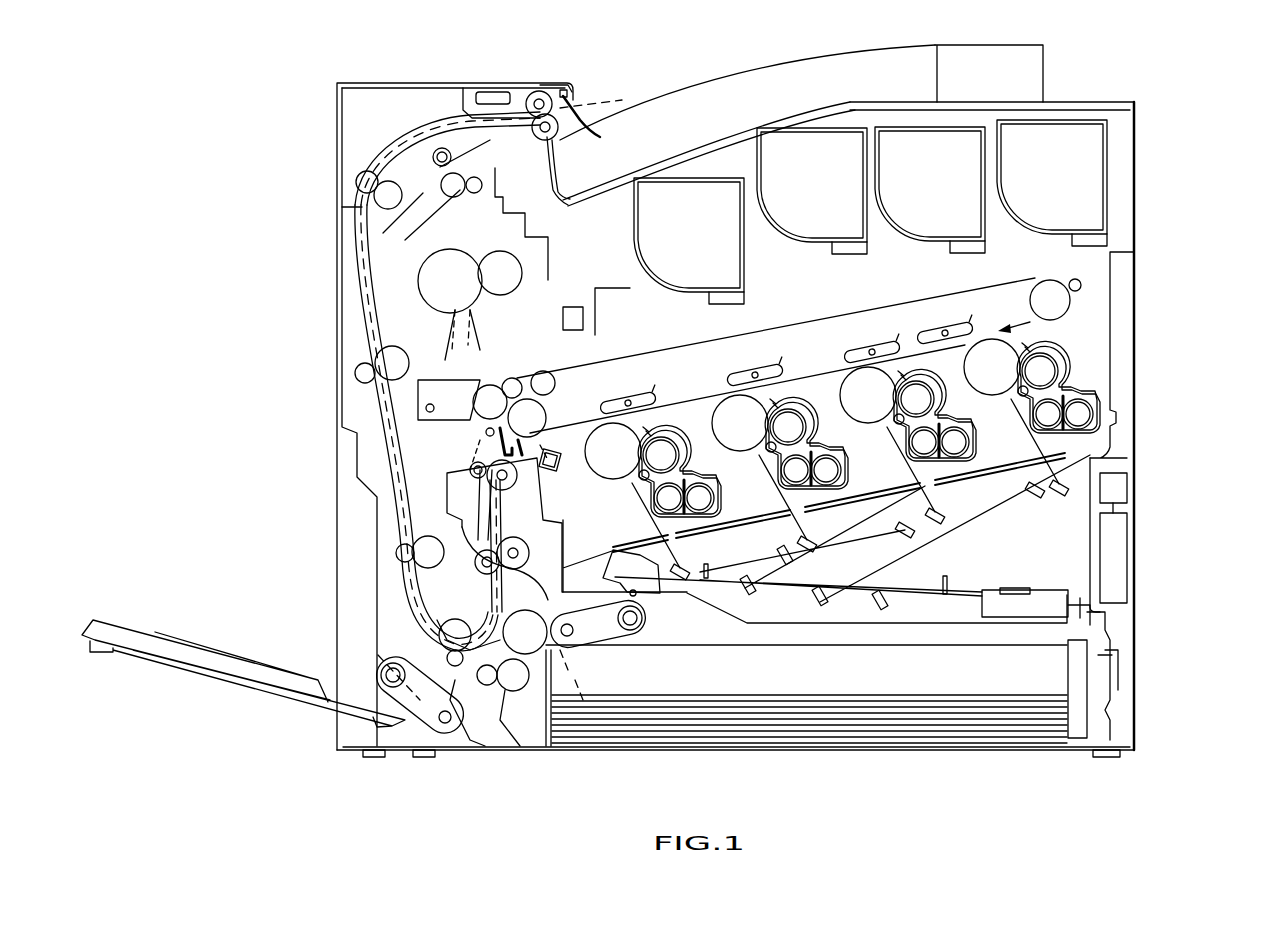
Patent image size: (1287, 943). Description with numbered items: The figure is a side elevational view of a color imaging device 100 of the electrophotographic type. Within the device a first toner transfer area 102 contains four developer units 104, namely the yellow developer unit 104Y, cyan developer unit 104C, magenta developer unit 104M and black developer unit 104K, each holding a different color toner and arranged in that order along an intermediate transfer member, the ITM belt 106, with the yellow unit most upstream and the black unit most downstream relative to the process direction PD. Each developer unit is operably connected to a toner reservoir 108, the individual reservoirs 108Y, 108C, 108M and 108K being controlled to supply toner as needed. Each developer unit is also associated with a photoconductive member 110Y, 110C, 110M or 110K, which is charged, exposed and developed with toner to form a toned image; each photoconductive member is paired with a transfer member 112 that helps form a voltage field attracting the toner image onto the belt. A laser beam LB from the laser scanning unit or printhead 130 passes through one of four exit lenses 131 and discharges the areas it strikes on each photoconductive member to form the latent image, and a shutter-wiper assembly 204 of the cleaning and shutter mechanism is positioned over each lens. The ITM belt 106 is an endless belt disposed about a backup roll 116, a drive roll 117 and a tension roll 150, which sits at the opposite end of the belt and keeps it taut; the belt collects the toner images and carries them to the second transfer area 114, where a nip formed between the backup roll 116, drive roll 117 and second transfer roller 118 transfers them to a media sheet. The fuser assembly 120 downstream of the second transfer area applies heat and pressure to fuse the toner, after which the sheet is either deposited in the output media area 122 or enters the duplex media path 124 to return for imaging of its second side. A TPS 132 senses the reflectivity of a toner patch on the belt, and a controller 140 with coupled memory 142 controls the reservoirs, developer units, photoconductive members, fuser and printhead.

The color imaging device 100 is at (220, 83).
The first toner transfer area 102 is at (895, 377).
The developer units 104 is at (955, 413).
The black developer unit 104K is at (690, 402).
The magenta developer unit 104M is at (818, 388).
The cyan developer unit 104C is at (950, 385).
The yellow developer unit 104Y is at (1100, 385).
The intermediate transfer member belt 106 is at (895, 305).
The toner reservoir 108 is at (947, 200).
The black toner reservoir 108K is at (718, 239).
The magenta toner reservoir 108M is at (838, 189).
The cyan toner reservoir 108C is at (955, 183).
The yellow toner reservoir 108Y is at (1076, 174).
The black photoconductive member 110K is at (636, 460).
The magenta photoconductive member 110M is at (765, 433).
The cyan photoconductive member 110C is at (891, 404).
The yellow photoconductive member 110Y is at (1015, 376).
The transfer member 112 is at (605, 405).
The second transfer area 114 is at (472, 450).
The backup roll 116 is at (500, 385).
The drive roll 117 is at (545, 395).
The second transfer roller 118 is at (478, 385).
The fuser assembly 120 is at (400, 246).
The output media area 122 is at (672, 115).
The duplex media path 124 is at (355, 318).
The laser scanning unit 130 is at (880, 520).
The exit lenses 131 is at (660, 590).
The TPS 132 is at (560, 472).
The controller 140 is at (1120, 548).
The memory 142 is at (1118, 492).
The tension roll 150 is at (1052, 318).
The shutter-wiper assemblies 204 is at (640, 548).
The laser beam LB is at (722, 568).
The process direction PD is at (1014, 317).